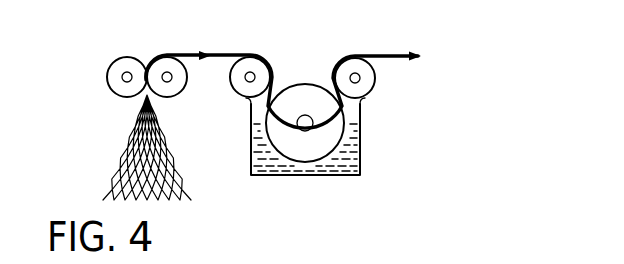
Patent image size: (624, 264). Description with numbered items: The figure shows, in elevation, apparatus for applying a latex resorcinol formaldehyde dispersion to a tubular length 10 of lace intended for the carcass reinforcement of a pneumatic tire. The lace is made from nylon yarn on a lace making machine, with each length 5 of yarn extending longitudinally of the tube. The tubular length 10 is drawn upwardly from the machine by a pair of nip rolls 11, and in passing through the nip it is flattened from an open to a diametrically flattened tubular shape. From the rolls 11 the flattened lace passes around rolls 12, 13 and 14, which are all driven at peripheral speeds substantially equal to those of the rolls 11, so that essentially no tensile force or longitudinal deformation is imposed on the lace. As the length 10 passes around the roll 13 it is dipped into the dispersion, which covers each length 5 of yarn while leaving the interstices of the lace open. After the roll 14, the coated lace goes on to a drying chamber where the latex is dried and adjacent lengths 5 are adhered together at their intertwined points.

The length of yarn 5 is at (177, 196).
The tubular length of lace 10 is at (120, 150).
The nip rolls 11 is at (110, 73).
The roll 12 is at (258, 71).
The roll 13 is at (330, 128).
The roll 14 is at (363, 86).